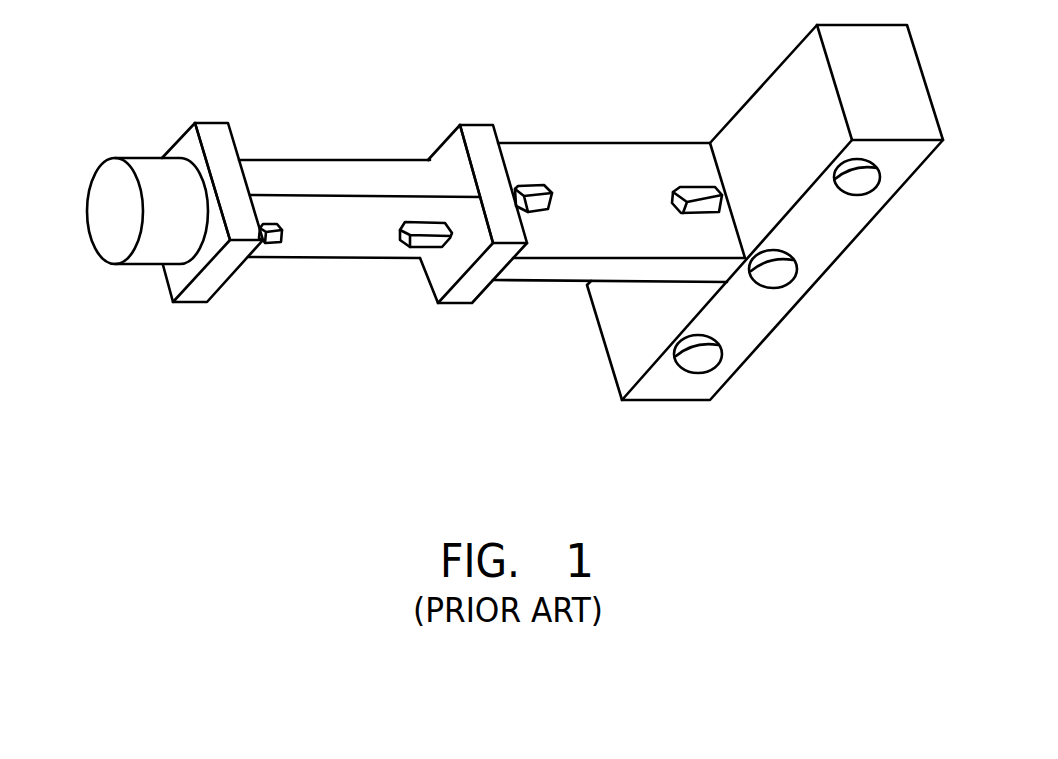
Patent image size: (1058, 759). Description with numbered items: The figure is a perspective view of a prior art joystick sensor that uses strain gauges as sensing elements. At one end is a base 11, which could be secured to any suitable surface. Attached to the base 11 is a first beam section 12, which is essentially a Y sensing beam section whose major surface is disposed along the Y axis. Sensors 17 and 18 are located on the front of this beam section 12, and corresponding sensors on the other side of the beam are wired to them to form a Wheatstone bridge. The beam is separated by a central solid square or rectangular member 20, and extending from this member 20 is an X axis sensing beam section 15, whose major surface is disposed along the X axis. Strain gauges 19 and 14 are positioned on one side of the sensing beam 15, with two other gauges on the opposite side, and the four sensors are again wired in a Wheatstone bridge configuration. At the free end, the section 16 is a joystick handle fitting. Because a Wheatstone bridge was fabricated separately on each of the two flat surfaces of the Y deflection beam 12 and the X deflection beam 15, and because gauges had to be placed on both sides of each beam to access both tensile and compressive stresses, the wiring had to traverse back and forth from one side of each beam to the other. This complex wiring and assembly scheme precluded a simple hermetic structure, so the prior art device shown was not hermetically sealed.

The base 11 is at (765, 328).
The first beam section 12 is at (557, 267).
The strain gauge 14 is at (423, 247).
The X axis sensing beam section 15 is at (342, 175).
The joystick handle fitting 16 is at (105, 196).
The sensor 17 is at (532, 193).
The sensor 18 is at (688, 195).
The strain gauge 19 is at (273, 243).
The central solid square or rectangular member 20 is at (483, 288).